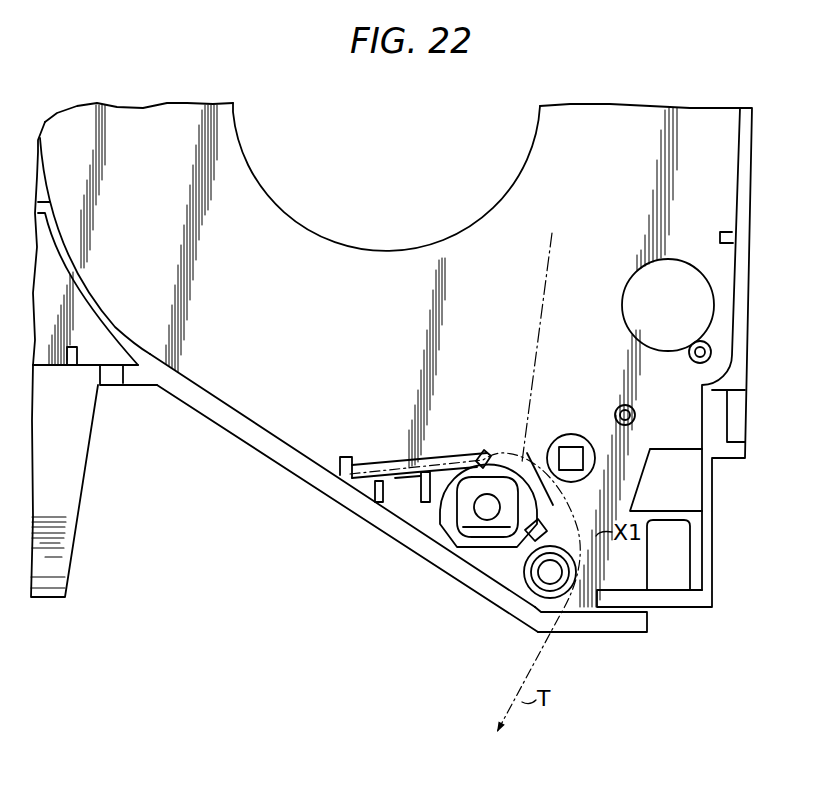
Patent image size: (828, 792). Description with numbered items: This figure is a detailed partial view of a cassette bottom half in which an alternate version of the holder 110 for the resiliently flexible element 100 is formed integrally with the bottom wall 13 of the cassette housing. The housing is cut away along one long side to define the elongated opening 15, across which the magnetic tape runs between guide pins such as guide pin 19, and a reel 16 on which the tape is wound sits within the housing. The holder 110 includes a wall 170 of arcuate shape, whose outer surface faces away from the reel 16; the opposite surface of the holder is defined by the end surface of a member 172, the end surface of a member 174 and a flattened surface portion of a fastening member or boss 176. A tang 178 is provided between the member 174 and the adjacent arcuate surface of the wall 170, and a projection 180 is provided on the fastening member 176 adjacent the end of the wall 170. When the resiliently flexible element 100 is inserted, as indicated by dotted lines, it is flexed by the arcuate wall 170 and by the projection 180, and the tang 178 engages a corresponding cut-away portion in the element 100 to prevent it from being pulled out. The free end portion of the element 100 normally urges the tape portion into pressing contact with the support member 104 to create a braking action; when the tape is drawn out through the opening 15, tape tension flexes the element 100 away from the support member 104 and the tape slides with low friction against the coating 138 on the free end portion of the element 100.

The bottom wall 13 is at (753, 172).
The opening 15 is at (163, 570).
The reel 16 is at (290, 203).
The guide pin 19 is at (527, 591).
The resiliently flexible element 100 is at (490, 446).
The support member 104 is at (571, 434).
The holder 110 is at (392, 445).
The coating 138 is at (549, 490).
The wall 170 is at (378, 458).
The member 172 is at (381, 497).
The member 174 is at (426, 503).
The fastening member 176 is at (470, 540).
The tang 178 is at (407, 479).
The projection 180 is at (508, 449).